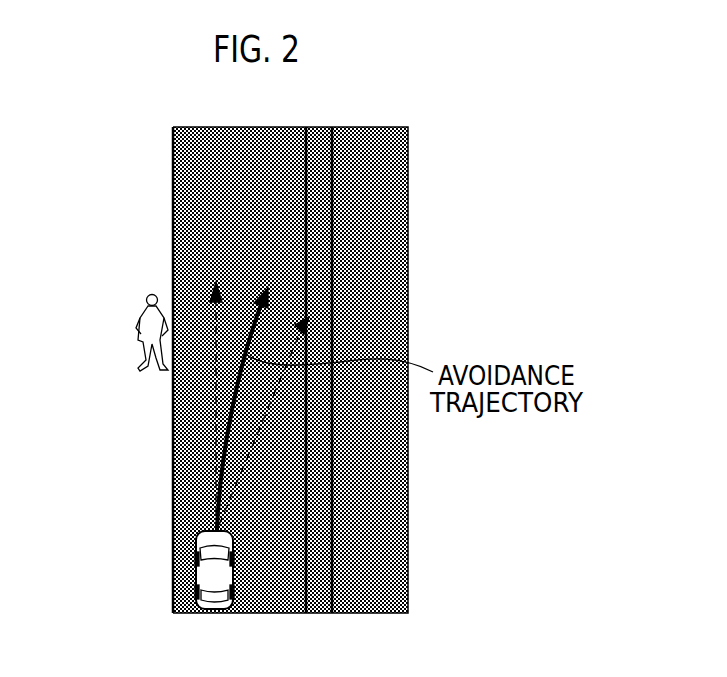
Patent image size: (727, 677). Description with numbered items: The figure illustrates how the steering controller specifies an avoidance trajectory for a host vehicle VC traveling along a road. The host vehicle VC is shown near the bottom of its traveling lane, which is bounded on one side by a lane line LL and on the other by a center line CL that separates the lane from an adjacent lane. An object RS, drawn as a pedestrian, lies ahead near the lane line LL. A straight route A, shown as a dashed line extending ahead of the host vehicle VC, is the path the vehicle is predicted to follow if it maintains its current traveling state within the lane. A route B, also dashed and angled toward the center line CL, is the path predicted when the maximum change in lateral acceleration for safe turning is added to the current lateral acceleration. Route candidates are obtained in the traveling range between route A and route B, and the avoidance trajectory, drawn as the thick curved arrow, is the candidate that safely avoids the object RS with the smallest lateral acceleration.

The lane line (left road edge) LL is at (173, 170).
The center line CL is at (332, 148).
The object RS is at (140, 311).
The route A is at (215, 412).
The route B is at (246, 408).
The host vehicle VC is at (195, 575).